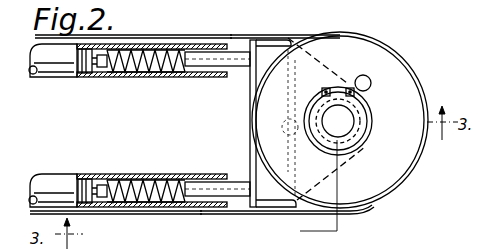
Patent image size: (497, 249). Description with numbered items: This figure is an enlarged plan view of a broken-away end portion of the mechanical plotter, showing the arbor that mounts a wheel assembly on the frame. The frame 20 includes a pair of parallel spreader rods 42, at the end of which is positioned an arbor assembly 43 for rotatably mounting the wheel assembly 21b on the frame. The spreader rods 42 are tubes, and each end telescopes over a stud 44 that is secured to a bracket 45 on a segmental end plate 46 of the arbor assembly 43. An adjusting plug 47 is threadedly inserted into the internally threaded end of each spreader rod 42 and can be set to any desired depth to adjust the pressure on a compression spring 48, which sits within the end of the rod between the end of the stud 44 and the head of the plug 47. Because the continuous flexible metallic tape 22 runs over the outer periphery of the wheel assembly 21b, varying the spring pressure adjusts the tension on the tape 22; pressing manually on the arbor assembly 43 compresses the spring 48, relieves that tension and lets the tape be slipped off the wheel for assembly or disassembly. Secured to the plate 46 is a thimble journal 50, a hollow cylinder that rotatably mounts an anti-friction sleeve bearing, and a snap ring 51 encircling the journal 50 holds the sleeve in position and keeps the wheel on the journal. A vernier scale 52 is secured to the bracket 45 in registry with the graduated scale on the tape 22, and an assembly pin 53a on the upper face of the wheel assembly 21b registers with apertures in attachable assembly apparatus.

The frame 20 is at (49, 89).
The wheel assembly 21b is at (420, 84).
The tape 22 is at (127, 214).
The spreader rod 42 is at (60, 77).
The arbor assembly 43 is at (266, 31).
The stud 44 is at (205, 61).
The bracket 45 is at (250, 165).
The segmental end plate 46 is at (330, 64).
The adjusting plug 47 is at (96, 73).
The compression spring 48 is at (133, 74).
The thimble journal 50 is at (372, 119).
The snap ring 51 is at (368, 133).
The vernier scale 52 is at (232, 34).
The assembly pin 53a is at (370, 90).